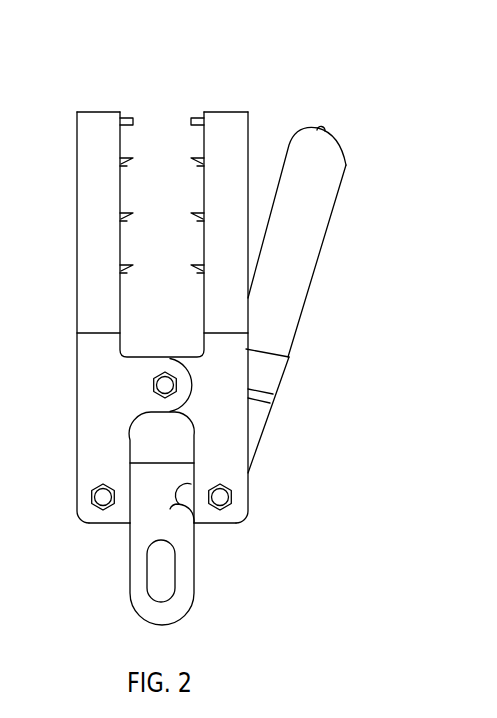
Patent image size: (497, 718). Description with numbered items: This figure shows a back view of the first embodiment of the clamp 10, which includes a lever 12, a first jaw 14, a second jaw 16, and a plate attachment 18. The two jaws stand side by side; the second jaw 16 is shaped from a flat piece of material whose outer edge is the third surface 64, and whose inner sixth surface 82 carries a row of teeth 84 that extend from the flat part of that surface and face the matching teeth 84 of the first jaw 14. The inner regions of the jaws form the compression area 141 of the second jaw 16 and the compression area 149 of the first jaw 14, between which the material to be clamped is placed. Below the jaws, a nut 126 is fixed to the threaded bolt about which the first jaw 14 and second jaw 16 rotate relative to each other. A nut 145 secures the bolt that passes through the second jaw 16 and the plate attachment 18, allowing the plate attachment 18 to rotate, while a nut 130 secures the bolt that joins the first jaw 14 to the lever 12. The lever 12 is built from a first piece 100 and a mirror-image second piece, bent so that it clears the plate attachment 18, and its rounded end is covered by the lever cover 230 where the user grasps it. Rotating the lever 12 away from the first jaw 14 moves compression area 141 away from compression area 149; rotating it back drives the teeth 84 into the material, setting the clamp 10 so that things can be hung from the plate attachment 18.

The clamp 10 is at (252, 42).
The lever 12 is at (308, 241).
The first jaw 14 is at (227, 297).
The second jaw 16 is at (95, 297).
The plate attachment 18 is at (137, 604).
The third surface 64 is at (77, 133).
The sixth surface 82 is at (203, 293).
The teeth 84 is at (193, 117).
The first piece 100 is at (253, 420).
The nut 126 is at (152, 385).
The nut 130 is at (221, 512).
The compression area 141 is at (110, 155).
The nut 145 is at (103, 511).
The compression area 149 is at (237, 155).
The lever cover 230 is at (318, 229).